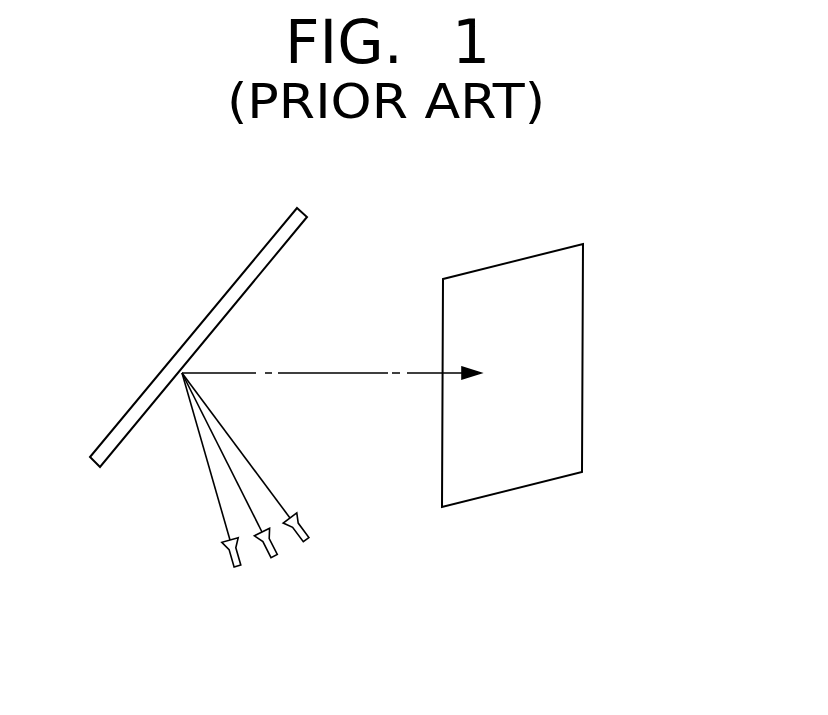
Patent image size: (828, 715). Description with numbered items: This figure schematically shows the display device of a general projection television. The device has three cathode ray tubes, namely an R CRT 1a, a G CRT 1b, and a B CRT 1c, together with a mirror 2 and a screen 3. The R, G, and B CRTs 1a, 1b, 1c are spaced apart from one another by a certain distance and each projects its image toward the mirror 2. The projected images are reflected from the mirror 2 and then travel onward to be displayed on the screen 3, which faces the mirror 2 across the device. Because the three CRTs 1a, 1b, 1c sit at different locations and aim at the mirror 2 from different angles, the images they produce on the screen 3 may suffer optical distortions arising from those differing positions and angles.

The R CRT 1a is at (224, 520).
The G CRT 1b is at (268, 522).
The B CRT 1c is at (276, 500).
The mirror 2 is at (140, 397).
The screen 3 is at (583, 322).